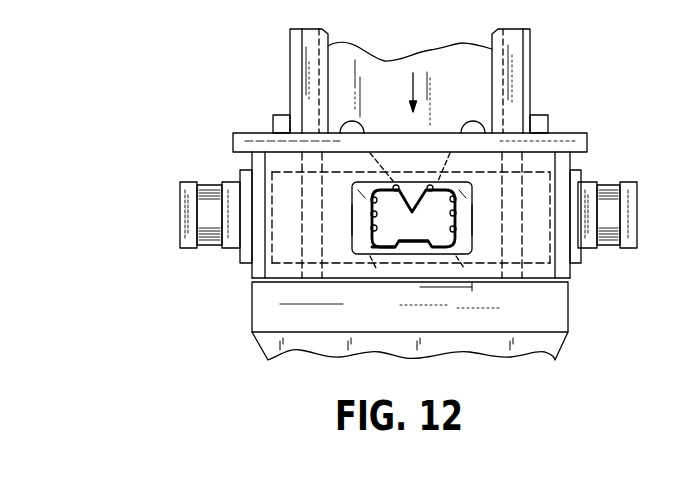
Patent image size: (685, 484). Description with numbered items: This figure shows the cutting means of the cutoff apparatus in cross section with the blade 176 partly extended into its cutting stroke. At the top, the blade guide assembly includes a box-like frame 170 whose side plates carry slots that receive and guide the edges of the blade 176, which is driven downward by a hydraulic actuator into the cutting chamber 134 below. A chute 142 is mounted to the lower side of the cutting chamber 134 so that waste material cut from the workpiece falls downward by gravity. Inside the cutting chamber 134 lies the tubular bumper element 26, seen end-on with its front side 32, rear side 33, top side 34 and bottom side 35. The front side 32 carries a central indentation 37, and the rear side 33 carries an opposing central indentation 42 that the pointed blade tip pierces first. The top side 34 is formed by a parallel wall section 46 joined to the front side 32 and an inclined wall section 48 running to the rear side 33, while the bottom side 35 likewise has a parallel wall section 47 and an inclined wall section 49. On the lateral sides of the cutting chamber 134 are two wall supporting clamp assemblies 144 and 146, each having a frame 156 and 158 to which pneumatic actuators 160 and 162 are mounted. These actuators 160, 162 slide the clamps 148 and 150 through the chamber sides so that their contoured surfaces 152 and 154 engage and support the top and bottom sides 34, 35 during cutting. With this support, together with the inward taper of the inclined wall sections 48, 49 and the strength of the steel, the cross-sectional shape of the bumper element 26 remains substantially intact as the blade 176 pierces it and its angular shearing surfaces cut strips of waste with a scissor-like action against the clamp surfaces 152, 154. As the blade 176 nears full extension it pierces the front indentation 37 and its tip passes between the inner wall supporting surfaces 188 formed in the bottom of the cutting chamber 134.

The box-like frame 170 is at (534, 53).
The blade 176 is at (387, 62).
The cutting chamber 134 is at (562, 133).
The wall supporting clamp assembly 144 is at (239, 168).
The wall supporting clamp assembly 146 is at (581, 168).
The pneumatic actuator 160 is at (188, 250).
The pneumatic actuator 162 is at (628, 248).
The frame 156 is at (255, 268).
The frame 158 is at (565, 268).
The chute 142 is at (499, 350).
The bumper element 26 is at (467, 256).
The front side 32 is at (407, 249).
The indentation 37 is at (413, 249).
The inner wall supporting surfaces 188 is at (380, 253).
The rear side 33 is at (402, 186).
The indentation 42 is at (418, 187).
The surface 152 is at (363, 198).
The slideable clamp 148 is at (371, 199).
The inclined wall section 48 is at (371, 214).
The parallel wall section 46 is at (371, 228).
The top side 34 is at (352, 222).
The surface 154 is at (462, 197).
The slideable clamp 150 is at (456, 209).
The inclined wall section 49 is at (456, 213).
The parallel wall section 47 is at (464, 248).
The bottom side 35 is at (456, 221).